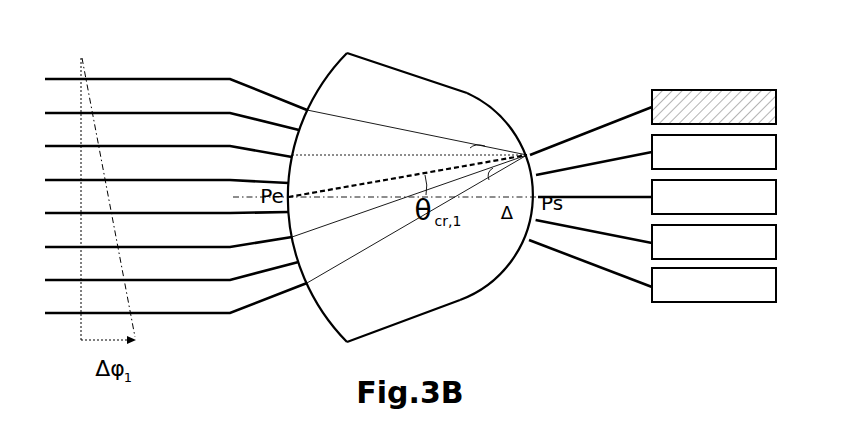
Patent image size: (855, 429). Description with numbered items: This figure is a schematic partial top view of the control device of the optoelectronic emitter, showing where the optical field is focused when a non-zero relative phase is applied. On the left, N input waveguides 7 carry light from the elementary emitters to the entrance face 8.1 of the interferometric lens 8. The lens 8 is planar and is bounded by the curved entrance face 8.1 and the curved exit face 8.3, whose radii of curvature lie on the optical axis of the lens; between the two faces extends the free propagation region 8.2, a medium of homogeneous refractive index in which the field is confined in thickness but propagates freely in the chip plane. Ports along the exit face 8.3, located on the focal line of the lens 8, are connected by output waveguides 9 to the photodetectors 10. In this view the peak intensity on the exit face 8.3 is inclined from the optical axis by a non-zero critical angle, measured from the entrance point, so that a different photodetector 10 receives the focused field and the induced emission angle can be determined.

The input waveguides 7 is at (144, 76).
The interferometric focusing lens 8 is at (423, 205).
The entrance face 8.1 is at (309, 298).
The free propagation region 8.2 is at (443, 277).
The exit face 8.3 is at (522, 252).
The output waveguides 9 is at (577, 130).
The photodetectors 10 is at (708, 87).